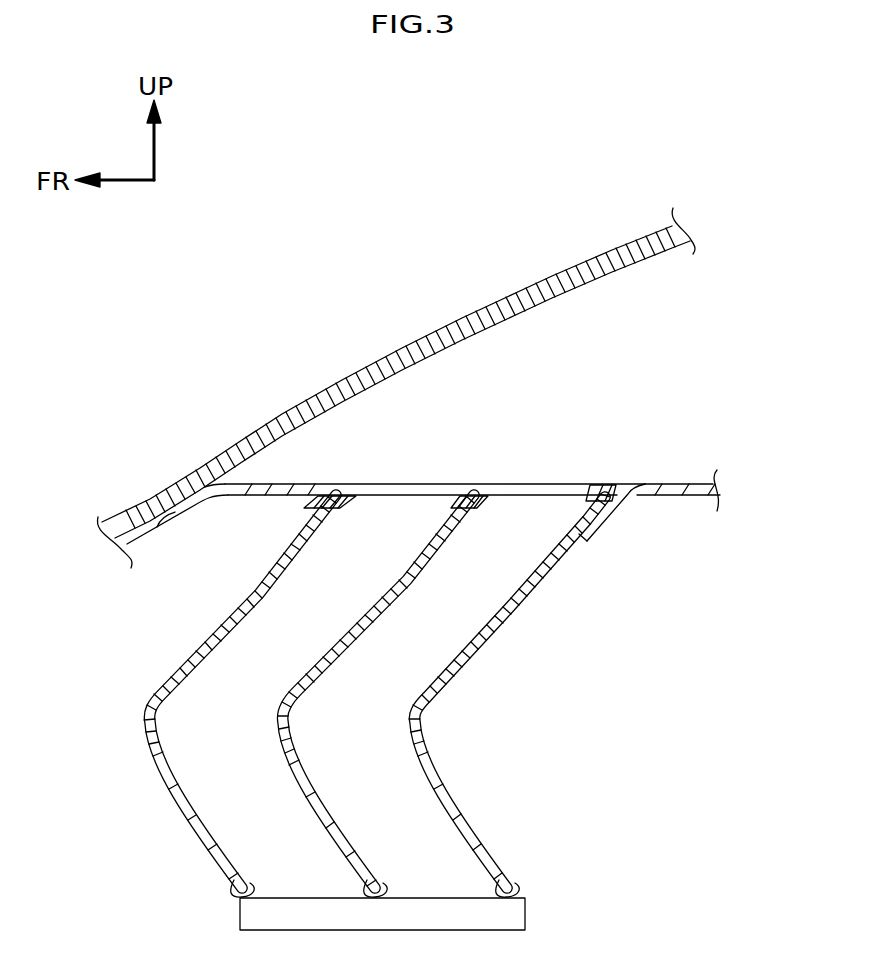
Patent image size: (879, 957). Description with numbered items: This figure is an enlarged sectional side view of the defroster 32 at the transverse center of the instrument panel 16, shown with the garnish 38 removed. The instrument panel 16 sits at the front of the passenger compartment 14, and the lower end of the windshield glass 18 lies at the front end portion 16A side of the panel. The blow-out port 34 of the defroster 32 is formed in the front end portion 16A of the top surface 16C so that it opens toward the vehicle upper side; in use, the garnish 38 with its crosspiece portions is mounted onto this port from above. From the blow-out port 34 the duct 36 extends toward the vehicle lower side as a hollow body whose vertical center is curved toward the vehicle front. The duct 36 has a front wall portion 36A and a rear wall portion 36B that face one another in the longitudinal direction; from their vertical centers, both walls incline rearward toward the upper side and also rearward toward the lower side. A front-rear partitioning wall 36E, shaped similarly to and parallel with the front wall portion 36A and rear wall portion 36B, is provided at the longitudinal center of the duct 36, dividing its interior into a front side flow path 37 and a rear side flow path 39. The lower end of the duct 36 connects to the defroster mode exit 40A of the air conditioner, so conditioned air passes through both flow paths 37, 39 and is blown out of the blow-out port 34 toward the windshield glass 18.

The passenger compartment 14 is at (774, 422).
The instrument panel 16 is at (435, 478).
The front end portion 16A is at (332, 484).
The top surface 16C is at (688, 484).
The windshield glass 18 is at (508, 318).
The defroster 32 is at (580, 405).
The blow-out port 34 is at (340, 517).
The duct 36 is at (343, 696).
The front wall portion 36A is at (216, 630).
The rear wall portion 36B is at (510, 606).
The front-rear partitioning wall 36E is at (386, 608).
The front side flow path 37 is at (299, 655).
The garnish 38 is at (609, 484).
The rear side flow path 39 is at (427, 656).
The defroster mode exit 40A is at (423, 898).